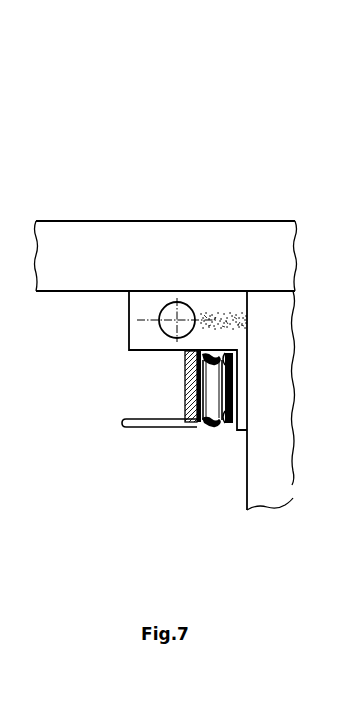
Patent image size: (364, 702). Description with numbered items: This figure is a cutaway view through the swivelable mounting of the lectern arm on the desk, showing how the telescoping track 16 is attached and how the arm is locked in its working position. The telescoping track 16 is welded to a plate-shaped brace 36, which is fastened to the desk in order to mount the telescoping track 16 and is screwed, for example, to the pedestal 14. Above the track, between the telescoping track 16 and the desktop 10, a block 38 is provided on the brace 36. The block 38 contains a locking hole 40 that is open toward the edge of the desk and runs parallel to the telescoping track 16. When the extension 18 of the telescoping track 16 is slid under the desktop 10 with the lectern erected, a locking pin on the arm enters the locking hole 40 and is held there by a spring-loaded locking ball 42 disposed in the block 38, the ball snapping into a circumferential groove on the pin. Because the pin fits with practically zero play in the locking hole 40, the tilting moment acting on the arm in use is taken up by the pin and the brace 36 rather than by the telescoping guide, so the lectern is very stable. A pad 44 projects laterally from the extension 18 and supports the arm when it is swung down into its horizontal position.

The desktop 10 is at (161, 240).
The pedestal 14 is at (272, 485).
The telescoping track 16 is at (226, 427).
The extension 18 is at (188, 427).
The plate-shaped brace 36 is at (237, 368).
The block 38 is at (143, 300).
The locking hole 40 is at (189, 305).
The spring-loaded locking ball 42 is at (207, 312).
The pad 44 is at (133, 427).